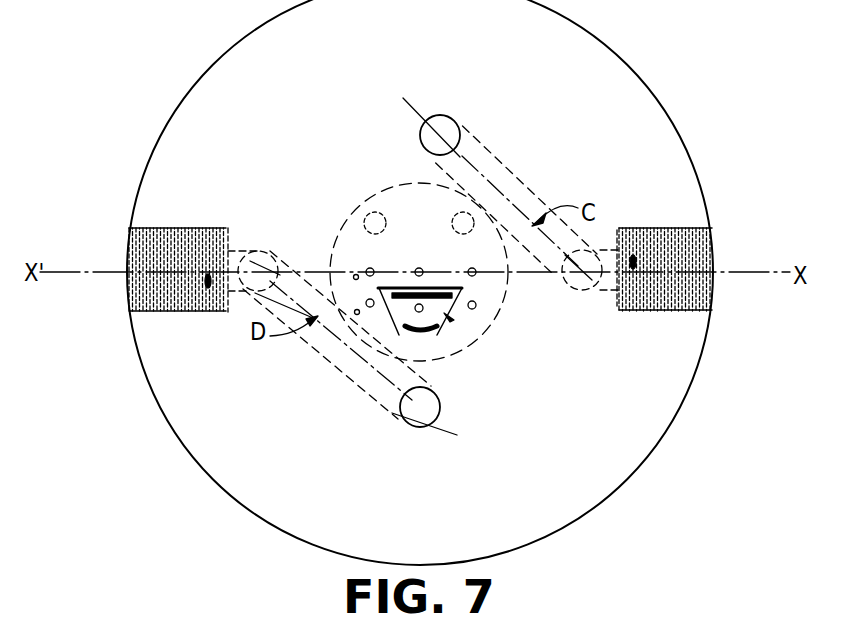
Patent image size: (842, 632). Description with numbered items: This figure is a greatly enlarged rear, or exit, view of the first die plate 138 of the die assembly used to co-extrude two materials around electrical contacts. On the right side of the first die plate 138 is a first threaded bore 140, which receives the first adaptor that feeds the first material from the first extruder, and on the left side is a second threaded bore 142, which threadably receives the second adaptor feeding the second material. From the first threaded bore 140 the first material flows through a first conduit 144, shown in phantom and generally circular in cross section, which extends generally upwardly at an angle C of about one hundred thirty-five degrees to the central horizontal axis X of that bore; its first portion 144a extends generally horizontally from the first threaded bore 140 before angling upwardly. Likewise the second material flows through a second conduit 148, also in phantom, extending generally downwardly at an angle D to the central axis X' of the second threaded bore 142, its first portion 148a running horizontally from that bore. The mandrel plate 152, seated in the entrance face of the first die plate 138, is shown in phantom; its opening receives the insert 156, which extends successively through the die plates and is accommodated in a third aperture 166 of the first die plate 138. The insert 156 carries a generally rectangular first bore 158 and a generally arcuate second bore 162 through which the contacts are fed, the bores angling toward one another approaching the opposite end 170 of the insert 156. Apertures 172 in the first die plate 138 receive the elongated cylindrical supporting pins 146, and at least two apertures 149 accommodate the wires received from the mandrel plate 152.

The first die plate 138 is at (656, 407).
The first threaded bore 140 is at (713, 263).
The second threaded bore 142 is at (127, 267).
The first conduit 144 is at (441, 115).
The first portion of the first conduit 144a is at (600, 293).
The supporting pins 146 is at (370, 307).
The second conduit 148 is at (320, 347).
The first portion of the second conduit 148a is at (237, 248).
The apertures 149 is at (355, 276).
The mandrel plate 152 is at (400, 180).
The insert 156 is at (449, 314).
The first bore 158 is at (402, 287).
The second bore 162 is at (447, 320).
The third aperture 166 is at (447, 318).
The opposite end of the insert 170 is at (395, 315).
The apertures 172 is at (367, 268).